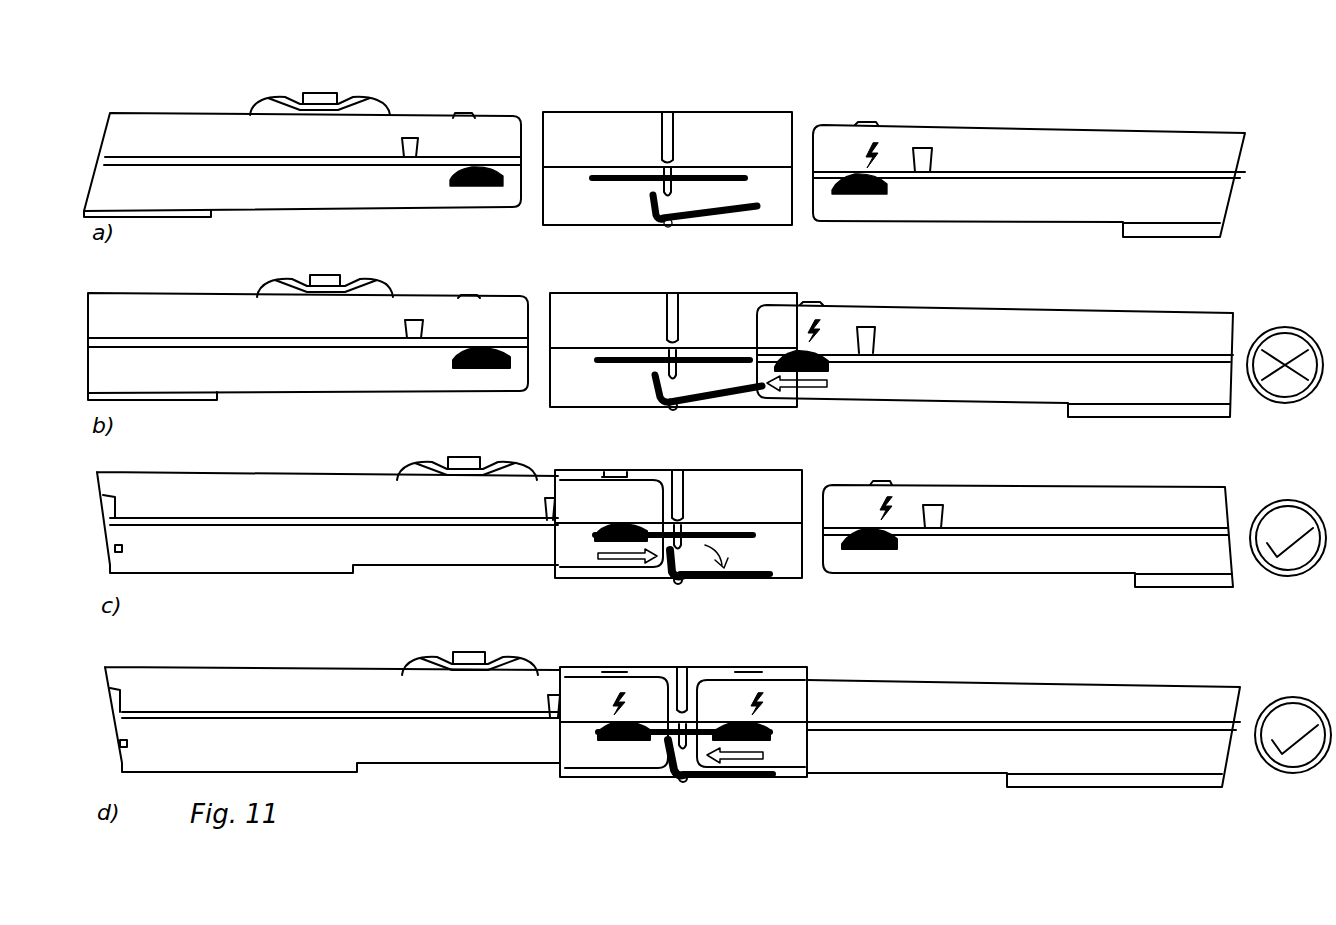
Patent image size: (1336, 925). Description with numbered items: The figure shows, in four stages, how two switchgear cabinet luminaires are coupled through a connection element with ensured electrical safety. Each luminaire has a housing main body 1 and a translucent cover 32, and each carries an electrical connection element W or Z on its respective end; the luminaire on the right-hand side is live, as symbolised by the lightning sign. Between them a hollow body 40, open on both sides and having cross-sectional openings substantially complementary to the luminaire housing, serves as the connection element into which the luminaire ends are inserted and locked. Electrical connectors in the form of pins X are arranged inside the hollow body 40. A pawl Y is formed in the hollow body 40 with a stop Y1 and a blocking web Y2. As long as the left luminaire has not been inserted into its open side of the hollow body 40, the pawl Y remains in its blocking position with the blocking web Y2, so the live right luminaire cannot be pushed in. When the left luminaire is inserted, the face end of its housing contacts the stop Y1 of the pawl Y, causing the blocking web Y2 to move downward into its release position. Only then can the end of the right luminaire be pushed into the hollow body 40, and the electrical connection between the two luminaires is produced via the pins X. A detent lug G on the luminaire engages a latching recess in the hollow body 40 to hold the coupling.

The housing main body 1 is at (240, 190).
The translucent cover 32 is at (212, 129).
The hollow body 40 is at (557, 294).
The detent lug G is at (468, 114).
The electrical connection element W is at (493, 183).
The pins X is at (612, 189).
The pawl Y is at (734, 218).
The electrical connection element Z is at (860, 191).
The stop Y1 is at (650, 203).
The blocking web Y2 is at (762, 208).